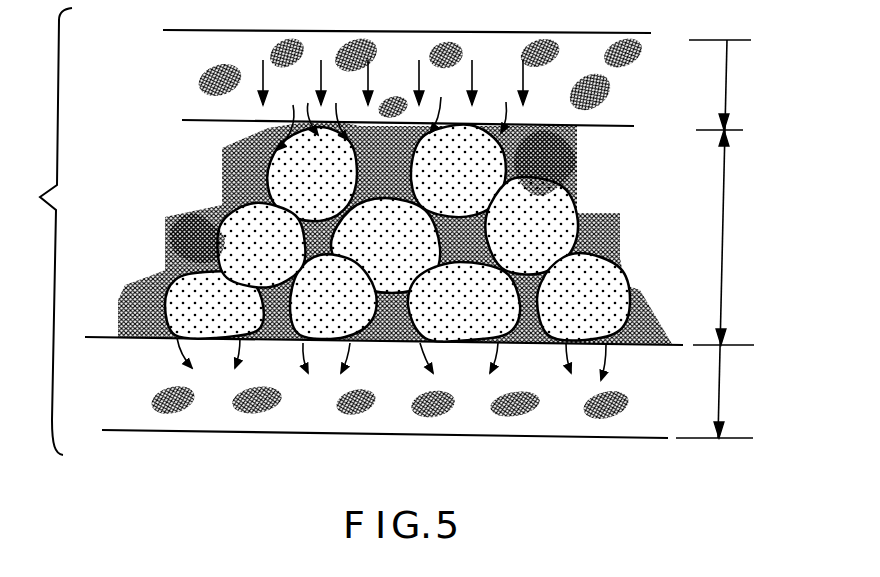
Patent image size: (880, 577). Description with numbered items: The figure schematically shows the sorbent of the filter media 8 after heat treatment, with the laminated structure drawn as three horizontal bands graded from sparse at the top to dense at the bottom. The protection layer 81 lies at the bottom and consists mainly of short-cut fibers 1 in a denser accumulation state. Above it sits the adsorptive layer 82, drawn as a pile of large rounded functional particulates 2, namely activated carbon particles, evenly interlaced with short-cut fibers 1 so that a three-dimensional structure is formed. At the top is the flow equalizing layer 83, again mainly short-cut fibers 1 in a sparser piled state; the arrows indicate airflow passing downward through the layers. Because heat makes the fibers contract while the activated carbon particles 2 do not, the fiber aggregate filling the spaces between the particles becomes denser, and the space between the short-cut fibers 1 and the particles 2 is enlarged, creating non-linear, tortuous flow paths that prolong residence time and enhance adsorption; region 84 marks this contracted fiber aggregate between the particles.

The short-cut fibers 1 is at (180, 233).
The functional particulates 2 is at (248, 230).
The filter media 8 is at (381, 231).
The protection layer 81 is at (463, 381).
The adsorptive layer 82 is at (450, 220).
The flow equalizing layer 83 is at (488, 76).
The binder bridge 84 is at (572, 190).